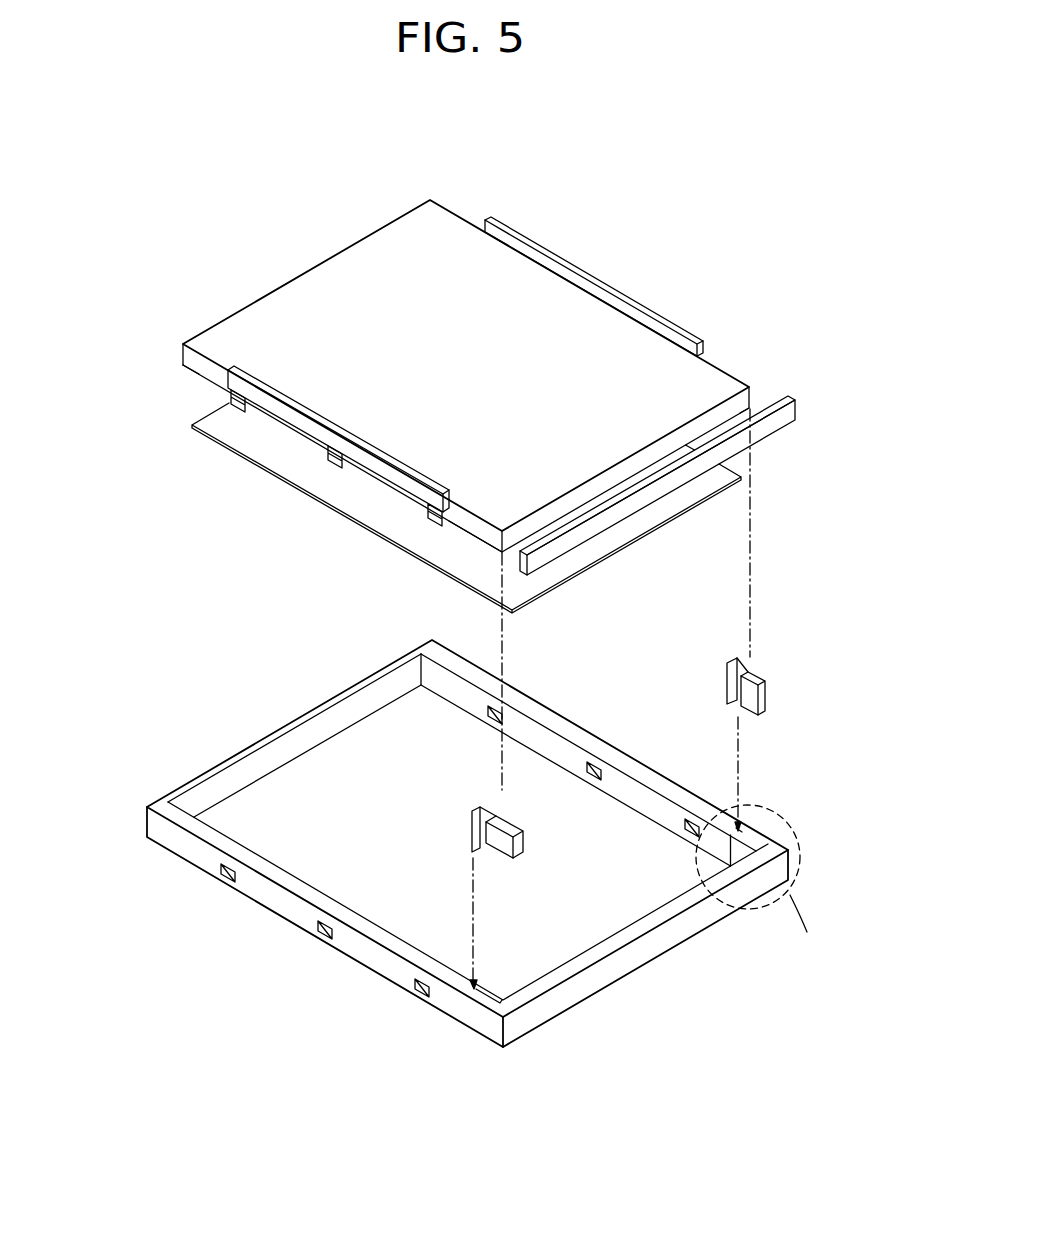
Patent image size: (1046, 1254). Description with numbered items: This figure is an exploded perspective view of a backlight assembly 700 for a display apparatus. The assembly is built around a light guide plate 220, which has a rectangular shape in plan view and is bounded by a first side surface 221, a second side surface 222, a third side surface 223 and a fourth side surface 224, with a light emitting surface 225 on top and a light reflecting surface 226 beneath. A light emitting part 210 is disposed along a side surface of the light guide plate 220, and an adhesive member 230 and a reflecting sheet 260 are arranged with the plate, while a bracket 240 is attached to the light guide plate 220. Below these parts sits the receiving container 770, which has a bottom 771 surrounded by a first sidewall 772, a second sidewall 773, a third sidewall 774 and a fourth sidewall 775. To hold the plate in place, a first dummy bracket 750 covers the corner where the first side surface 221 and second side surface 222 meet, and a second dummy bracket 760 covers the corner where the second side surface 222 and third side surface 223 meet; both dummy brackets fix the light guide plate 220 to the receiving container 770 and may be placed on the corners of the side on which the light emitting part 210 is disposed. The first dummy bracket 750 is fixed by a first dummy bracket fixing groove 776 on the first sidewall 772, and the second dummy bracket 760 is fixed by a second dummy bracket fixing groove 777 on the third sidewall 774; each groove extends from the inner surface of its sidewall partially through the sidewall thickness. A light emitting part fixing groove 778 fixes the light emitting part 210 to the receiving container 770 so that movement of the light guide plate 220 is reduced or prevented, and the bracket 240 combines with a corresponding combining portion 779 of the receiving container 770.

The backlight assembly 700 is at (318, 184).
The light emitting part 210 is at (777, 437).
The light guide plate 220 is at (469, 376).
The first side surface 221 is at (727, 380).
The second side surface 222 is at (760, 395).
The third side surface 223 is at (187, 360).
The fourth side surface 224 is at (185, 346).
The light emitting surface 225 is at (262, 316).
The light reflecting surface 226 is at (202, 378).
The adhesive member 230 is at (485, 540).
The bracket 240 is at (622, 293).
The reflecting sheet 260 is at (623, 553).
The first dummy bracket 750 is at (758, 697).
The second dummy bracket 760 is at (514, 833).
The receiving container 770 is at (462, 861).
The bottom 771 is at (303, 860).
The first sidewall 772 is at (768, 829).
The second sidewall 773 is at (775, 868).
The third sidewall 774 is at (193, 850).
The fourth sidewall 775 is at (173, 789).
The first dummy bracket fixing groove 776 is at (735, 812).
The second dummy bracket fixing groove 777 is at (467, 990).
The light emitting part fixing groove 778 is at (770, 845).
The combining portions 779 is at (417, 993).